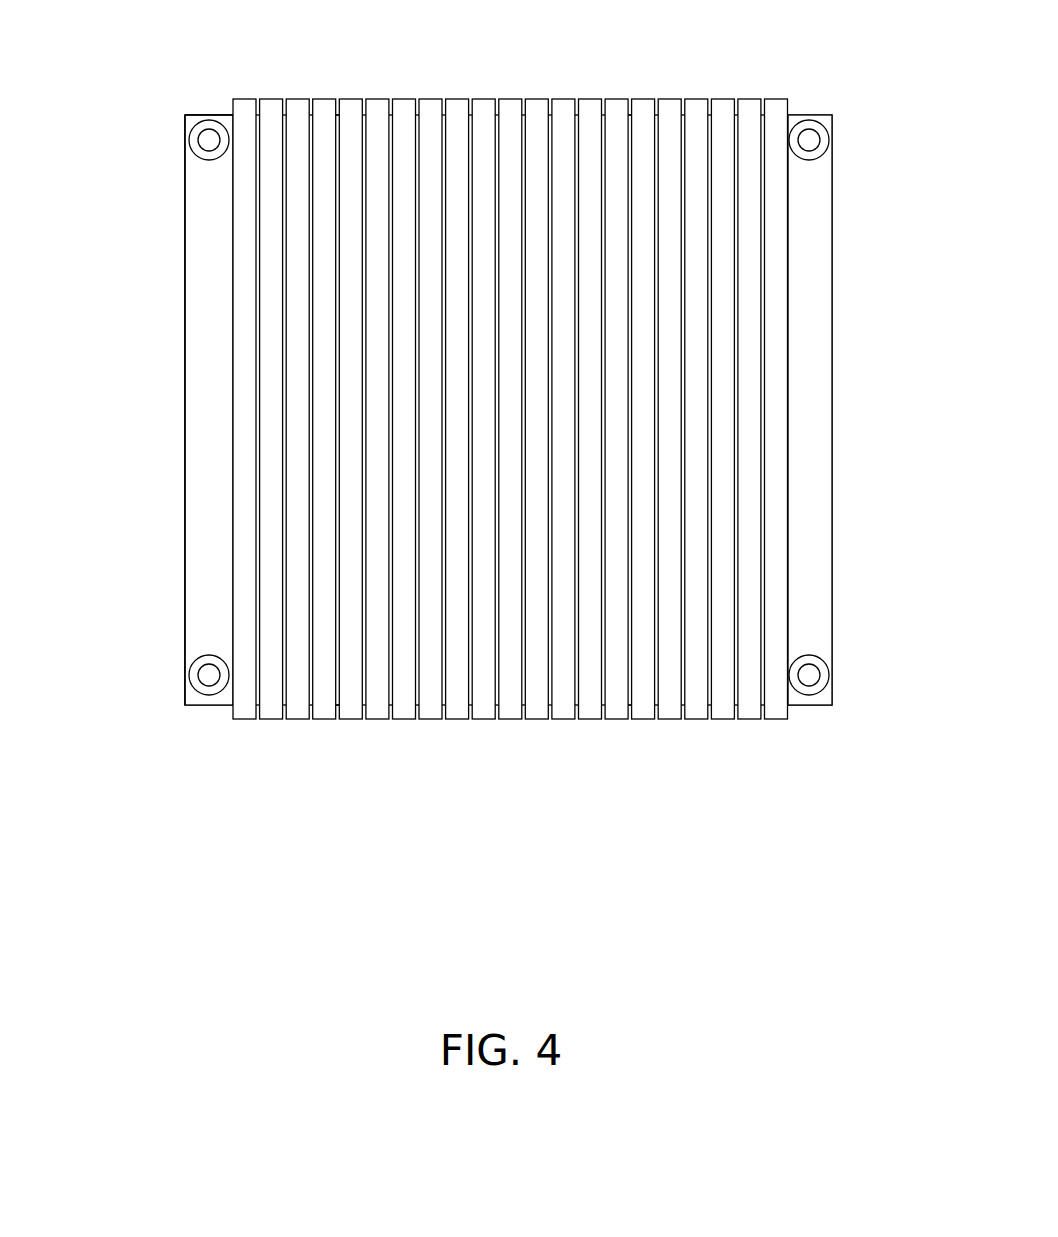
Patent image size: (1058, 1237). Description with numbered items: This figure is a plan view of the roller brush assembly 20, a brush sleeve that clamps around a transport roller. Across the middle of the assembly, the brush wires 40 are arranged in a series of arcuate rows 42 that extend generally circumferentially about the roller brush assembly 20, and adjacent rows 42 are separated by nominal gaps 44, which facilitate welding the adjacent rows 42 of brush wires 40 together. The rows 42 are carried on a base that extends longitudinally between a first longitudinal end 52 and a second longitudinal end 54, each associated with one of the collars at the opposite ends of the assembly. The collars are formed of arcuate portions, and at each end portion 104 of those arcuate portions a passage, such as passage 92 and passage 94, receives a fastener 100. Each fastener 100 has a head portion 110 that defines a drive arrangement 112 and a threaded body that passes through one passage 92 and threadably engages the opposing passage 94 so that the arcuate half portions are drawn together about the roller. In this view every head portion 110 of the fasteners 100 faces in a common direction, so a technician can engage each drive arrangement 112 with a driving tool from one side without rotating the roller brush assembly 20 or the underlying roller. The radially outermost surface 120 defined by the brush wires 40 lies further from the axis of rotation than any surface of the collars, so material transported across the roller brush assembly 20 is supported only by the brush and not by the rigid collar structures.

The roller brush assembly 20 is at (297, 833).
The brush wires 40 is at (587, 110).
The rows 42 is at (727, 92).
The gaps 44 is at (328, 720).
The first longitudinal end 52 is at (160, 98).
The second longitudinal end 54 is at (855, 87).
The passage 92 is at (170, 150).
The passage 94 is at (142, 135).
The fastener 100 is at (212, 135).
The end portion 104 is at (165, 165).
The head portion 110 is at (207, 160).
The drive arrangement 112 is at (208, 133).
The radially outermost surface 120 is at (323, 100).